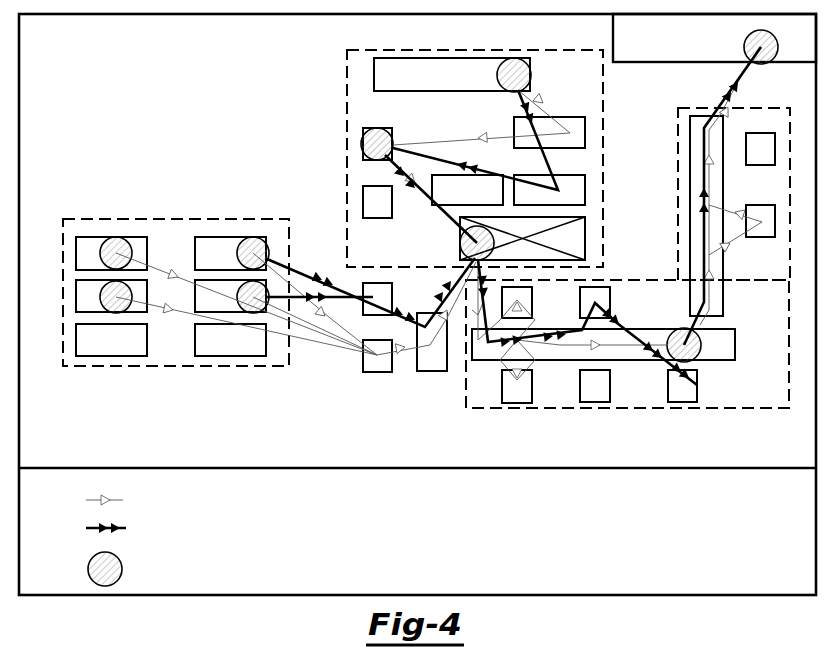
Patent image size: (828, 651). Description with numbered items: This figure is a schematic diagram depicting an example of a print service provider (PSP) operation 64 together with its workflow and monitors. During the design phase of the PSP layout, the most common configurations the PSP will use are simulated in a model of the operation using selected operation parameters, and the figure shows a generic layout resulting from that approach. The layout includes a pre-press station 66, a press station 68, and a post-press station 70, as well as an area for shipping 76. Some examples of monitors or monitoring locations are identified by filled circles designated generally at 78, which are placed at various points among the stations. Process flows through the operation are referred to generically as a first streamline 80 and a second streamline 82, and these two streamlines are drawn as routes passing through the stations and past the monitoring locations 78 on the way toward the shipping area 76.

The PSP operation 64 is at (233, 54).
The pre-press station 66 is at (176, 252).
The press station 68 is at (386, 254).
The post-press station 70 is at (769, 307).
The area for shipping 76 is at (644, 52).
The monitors/monitoring locations 78 is at (302, 573).
The streamline 1 80 is at (243, 498).
The streamline 2 82 is at (248, 535).